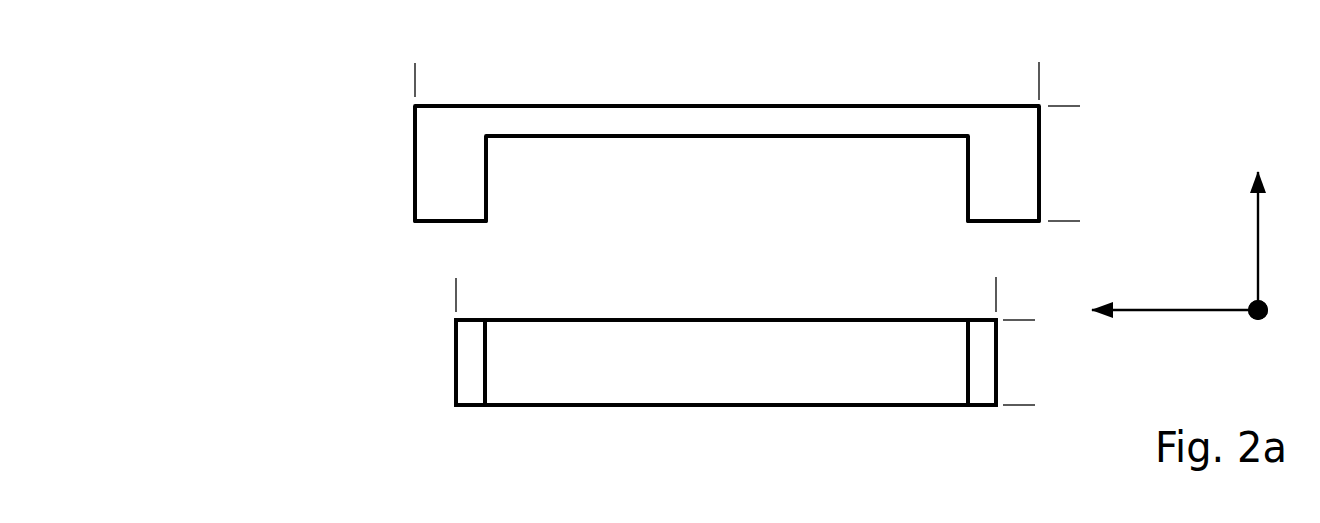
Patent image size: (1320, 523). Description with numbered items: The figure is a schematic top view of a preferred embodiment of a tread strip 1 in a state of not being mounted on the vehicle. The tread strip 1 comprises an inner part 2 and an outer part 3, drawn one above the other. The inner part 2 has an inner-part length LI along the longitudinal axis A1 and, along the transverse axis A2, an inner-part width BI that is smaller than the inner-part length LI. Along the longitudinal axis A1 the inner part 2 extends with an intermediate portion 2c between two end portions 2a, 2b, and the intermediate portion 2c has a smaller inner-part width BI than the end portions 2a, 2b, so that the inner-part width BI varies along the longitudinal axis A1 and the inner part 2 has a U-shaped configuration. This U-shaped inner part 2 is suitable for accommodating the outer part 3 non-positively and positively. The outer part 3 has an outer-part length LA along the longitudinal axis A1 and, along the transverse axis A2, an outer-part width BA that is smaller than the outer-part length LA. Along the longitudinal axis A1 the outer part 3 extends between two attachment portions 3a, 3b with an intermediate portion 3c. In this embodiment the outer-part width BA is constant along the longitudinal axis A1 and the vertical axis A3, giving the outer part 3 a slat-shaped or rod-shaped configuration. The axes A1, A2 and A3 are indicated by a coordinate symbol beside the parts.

The tread strip 1 is at (1162, 84).
The inner part 2 is at (370, 108).
The end portion 2a is at (448, 167).
The end portion 2b is at (1012, 190).
The intermediate portion 2c is at (797, 124).
The outer part 3 is at (415, 322).
The attachment portion 3a is at (472, 370).
The attachment portion 3b is at (978, 370).
The intermediate portion 3c is at (709, 382).
The inner-part length LI is at (1038, 84).
The inner-part width BI is at (1059, 107).
The outer-part length LA is at (457, 301).
The outer-part width BA is at (1012, 321).
The longitudinal axis A1 is at (1170, 288).
The transverse axis A2 is at (1227, 236).
The vertical axis A3 is at (1237, 293).